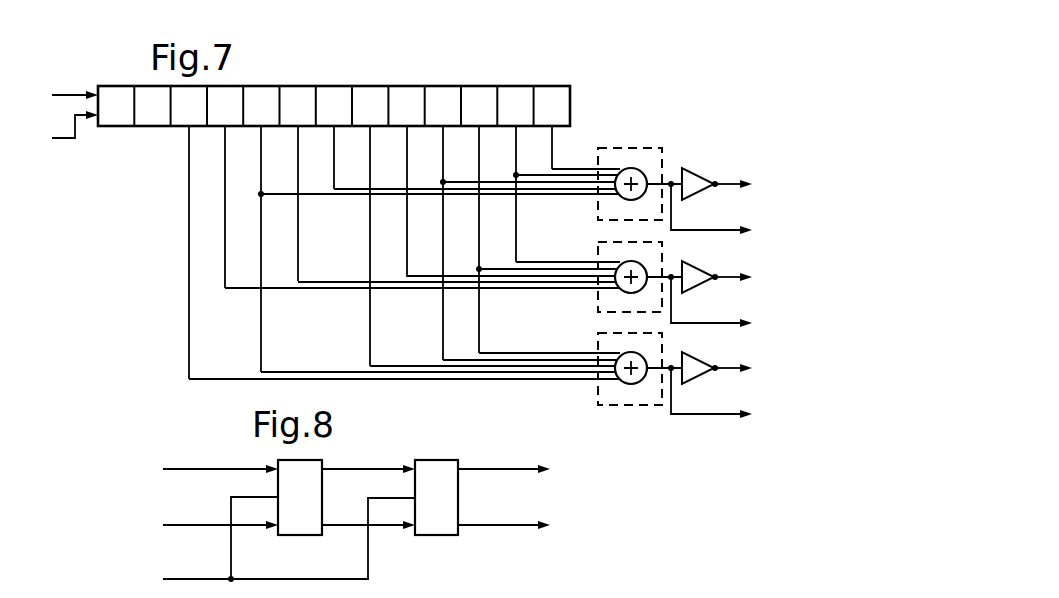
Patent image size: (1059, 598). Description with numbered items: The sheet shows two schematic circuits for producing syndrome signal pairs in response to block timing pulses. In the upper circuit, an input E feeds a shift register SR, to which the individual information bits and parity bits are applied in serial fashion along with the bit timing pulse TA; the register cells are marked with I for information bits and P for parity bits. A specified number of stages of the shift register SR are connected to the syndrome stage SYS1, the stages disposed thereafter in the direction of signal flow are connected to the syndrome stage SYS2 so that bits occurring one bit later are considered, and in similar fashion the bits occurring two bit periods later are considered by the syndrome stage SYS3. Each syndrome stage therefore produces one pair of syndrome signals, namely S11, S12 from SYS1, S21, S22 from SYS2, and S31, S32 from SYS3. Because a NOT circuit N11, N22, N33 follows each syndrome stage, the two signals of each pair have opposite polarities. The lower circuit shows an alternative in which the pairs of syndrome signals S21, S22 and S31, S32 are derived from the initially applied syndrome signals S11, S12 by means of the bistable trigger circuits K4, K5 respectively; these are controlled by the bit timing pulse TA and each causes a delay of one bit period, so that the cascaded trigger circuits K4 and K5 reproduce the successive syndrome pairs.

In FIG. 7, the input signal E is at (66, 95).
In FIG. 7, the timing pulse TA is at (62, 131).
In FIG. 8, the timing pulse TA is at (289, 539).
In FIG. 7, the shift register SR is at (331, 85).
In FIG. 7, the syndrome stage SYS1 is at (597, 348).
In FIG. 7, the syndrome stage SYS2 is at (597, 256).
In FIG. 7, the syndrome stage SYS3 is at (622, 147).
In FIG. 7, the NOT circuit N11 is at (706, 357).
In FIG. 7, the NOT circuit N22 is at (708, 266).
In FIG. 7, the NOT circuit N33 is at (700, 171).
In FIG. 7, the syndrome signal S11 is at (732, 356).
In FIG. 8, the syndrome signal S11 is at (220, 456).
In FIG. 7, the syndrome signal S12 is at (711, 393).
In FIG. 8, the syndrome signal S12 is at (220, 512).
In FIG. 7, the syndrome signal S21 is at (732, 264).
In FIG. 8, the syndrome signal S21 is at (368, 457).
In FIG. 7, the syndrome signal S22 is at (711, 302).
In FIG. 8, the syndrome signal S22 is at (368, 507).
In FIG. 7, the syndrome signal S31 is at (732, 170).
In FIG. 8, the syndrome signal S31 is at (504, 457).
In FIG. 7, the syndrome signal S32 is at (711, 209).
In FIG. 8, the syndrome signal S32 is at (504, 512).
In FIG. 8, the bistable trigger circuit K4 is at (300, 497).
In FIG. 8, the bistable trigger circuit K5 is at (436, 497).